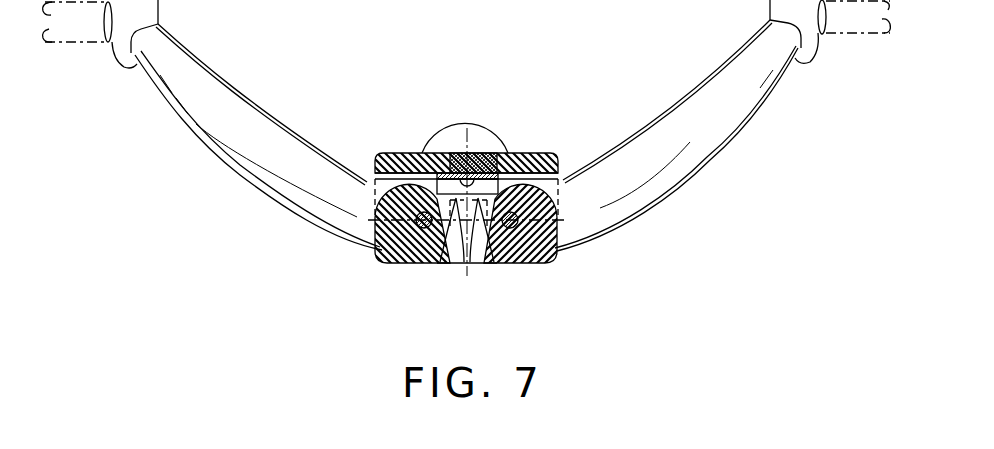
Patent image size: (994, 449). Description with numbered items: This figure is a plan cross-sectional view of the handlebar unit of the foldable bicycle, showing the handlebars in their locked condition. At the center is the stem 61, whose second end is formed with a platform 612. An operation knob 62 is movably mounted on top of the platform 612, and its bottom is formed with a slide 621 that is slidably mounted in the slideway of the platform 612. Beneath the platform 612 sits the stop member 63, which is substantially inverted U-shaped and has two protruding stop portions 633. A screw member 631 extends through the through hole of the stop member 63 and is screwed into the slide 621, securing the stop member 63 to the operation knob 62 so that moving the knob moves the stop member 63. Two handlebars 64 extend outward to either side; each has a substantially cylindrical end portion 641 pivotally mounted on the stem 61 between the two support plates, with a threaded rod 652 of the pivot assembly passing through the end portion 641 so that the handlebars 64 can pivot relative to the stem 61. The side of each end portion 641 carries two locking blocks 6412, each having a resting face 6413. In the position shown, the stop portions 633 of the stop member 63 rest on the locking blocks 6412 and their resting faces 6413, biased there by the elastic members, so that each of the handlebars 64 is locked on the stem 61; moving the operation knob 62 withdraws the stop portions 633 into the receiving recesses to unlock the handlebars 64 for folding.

The stem 61 is at (404, 139).
The operation knob 62 is at (467, 137).
The slide 621 is at (450, 155).
The screw member 631 is at (497, 165).
The platform 612 is at (545, 155).
The stop member 63 is at (377, 207).
The stop portions 633 is at (568, 192).
The handlebars 64 is at (227, 115).
The end portion 641 is at (555, 253).
The locking blocks 6412 is at (455, 243).
The resting face 6413 is at (470, 243).
The threaded rods 652 is at (367, 247).